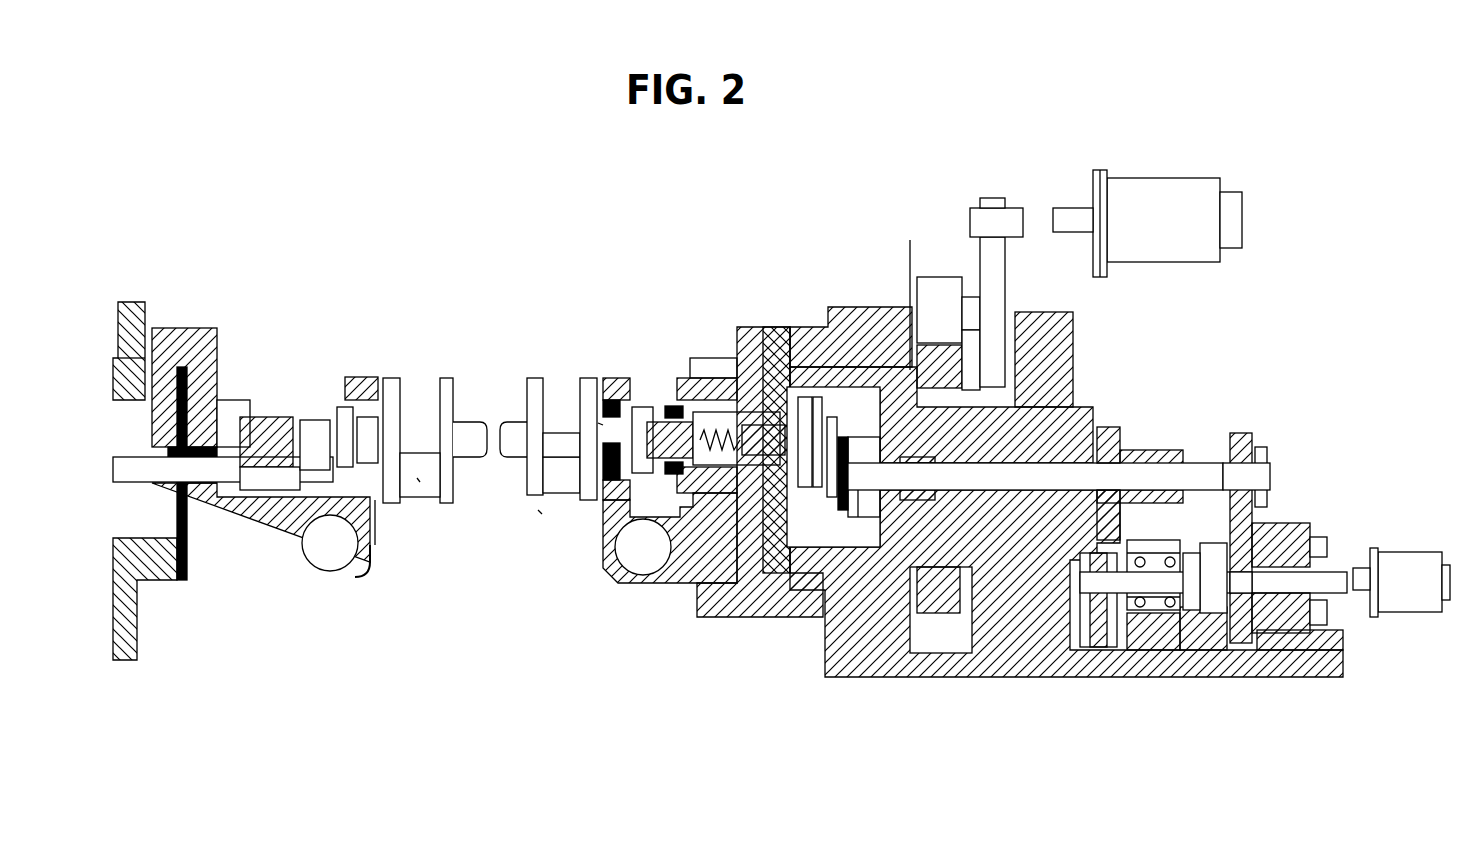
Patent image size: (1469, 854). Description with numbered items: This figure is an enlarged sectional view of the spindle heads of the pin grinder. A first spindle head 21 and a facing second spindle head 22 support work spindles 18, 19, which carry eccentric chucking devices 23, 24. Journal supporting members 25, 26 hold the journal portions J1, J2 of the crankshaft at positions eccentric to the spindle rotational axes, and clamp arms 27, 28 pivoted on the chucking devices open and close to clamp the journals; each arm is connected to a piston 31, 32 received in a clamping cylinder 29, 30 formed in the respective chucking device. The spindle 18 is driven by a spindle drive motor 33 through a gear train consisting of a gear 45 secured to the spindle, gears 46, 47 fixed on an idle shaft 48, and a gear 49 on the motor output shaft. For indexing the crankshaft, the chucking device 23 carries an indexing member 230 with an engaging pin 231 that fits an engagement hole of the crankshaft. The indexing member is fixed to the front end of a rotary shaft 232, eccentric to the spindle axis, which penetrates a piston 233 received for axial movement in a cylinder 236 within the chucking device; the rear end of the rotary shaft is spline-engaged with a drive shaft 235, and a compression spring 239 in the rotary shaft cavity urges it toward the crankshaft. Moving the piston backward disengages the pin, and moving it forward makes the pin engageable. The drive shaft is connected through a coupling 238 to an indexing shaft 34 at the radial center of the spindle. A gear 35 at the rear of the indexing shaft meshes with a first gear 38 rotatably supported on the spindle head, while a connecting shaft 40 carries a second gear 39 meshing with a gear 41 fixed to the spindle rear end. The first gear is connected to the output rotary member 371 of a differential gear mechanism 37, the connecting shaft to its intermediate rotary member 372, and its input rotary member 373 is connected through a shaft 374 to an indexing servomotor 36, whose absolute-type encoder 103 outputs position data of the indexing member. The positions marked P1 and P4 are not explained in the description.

The work spindle 18 is at (815, 337).
The work spindle 19 is at (240, 560).
The first spindle head 21 is at (1110, 346).
The second spindle head 22 is at (197, 288).
The eccentric chucking device 23 is at (652, 385).
The eccentric chucking device 24 is at (392, 516).
The journal supporting member 25 is at (605, 492).
The journal supporting member 26 is at (435, 400).
The clamp arm 27 is at (592, 422).
The clamp arm 28 is at (392, 392).
The clamping cylinder 29 is at (660, 583).
The clamping cylinder 30 is at (374, 562).
The piston 31 is at (625, 555).
The piston 32 is at (330, 558).
The spindle drive motor 33 is at (1182, 188).
The indexing shaft 34 is at (1125, 470).
The gear 35 is at (1250, 440).
The indexing servomotor 36 is at (1418, 560).
The differential gear mechanism 37 is at (1204, 520).
The first gear 38 is at (1238, 628).
The second gear 39 is at (1103, 648).
The connecting shaft 40 is at (1152, 582).
The gear 41 is at (1103, 428).
The gear 45 is at (937, 614).
The gear 46 is at (937, 287).
The gear 47 is at (997, 288).
The idle shaft 48 is at (970, 303).
The gear 49 is at (990, 208).
The encoder 103 is at (1447, 605).
The indexing member 230 is at (642, 410).
The engaging pin 231 is at (605, 476).
The rotary shaft 232 is at (665, 462).
The piston 233 is at (737, 392).
The drive shaft 235 is at (770, 382).
The cylinder 236 is at (745, 540).
The coupling 238 is at (820, 522).
The compression spring 239 is at (713, 390).
The output rotary member 371 is at (1258, 530).
The intermediate rotary member 372 is at (1213, 612).
The input rotary member 373 is at (1308, 575).
The shaft 374 is at (1335, 588).
The journal portion J1 is at (600, 424).
The journal portion J2 is at (340, 412).
The point P1 is at (540, 513).
The point P4 is at (418, 480).